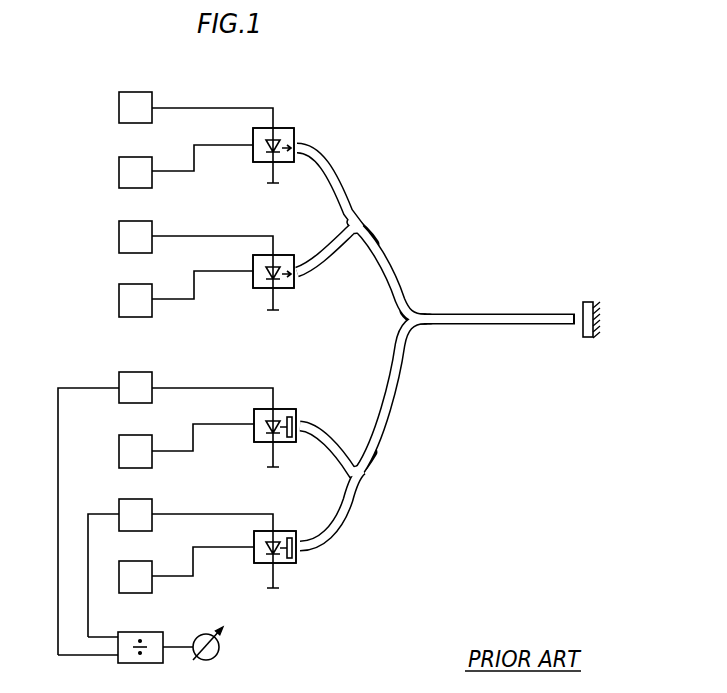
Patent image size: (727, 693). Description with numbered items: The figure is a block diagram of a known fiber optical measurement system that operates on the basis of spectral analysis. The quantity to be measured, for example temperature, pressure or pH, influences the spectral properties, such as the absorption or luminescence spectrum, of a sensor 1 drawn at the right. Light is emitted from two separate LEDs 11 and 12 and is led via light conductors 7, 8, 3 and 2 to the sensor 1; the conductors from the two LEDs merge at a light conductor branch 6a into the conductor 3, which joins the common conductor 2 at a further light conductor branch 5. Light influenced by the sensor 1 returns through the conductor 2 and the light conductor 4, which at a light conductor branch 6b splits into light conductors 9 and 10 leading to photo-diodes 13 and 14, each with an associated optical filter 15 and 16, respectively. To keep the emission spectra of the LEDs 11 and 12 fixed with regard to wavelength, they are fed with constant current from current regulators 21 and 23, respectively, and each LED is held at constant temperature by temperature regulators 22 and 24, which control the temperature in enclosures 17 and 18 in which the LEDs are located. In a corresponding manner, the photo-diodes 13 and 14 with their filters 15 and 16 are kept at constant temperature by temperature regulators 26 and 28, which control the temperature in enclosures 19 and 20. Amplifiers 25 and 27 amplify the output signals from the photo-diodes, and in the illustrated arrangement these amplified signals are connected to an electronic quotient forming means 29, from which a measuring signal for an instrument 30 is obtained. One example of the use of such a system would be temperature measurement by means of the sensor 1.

The sensor 1 is at (587, 302).
The light conductor 2 is at (472, 312).
The light conductor 3 is at (398, 257).
The light conductor 4 is at (400, 400).
The light conductor branch 5 is at (418, 309).
The light conductor branch 6a is at (362, 217).
The light conductor branch 6b is at (350, 482).
The light conductor 7 is at (330, 172).
The light conductor 8 is at (310, 268).
The light conductor 9 is at (318, 428).
The light conductor 10 is at (318, 540).
The LED 11 is at (286, 128).
The LED 12 is at (286, 255).
The photo-diode 13 is at (287, 410).
The photo-diode 14 is at (287, 531).
The optical filter 15 is at (289, 438).
The optical filter 16 is at (289, 559).
The enclosure 17 is at (254, 129).
The enclosure 18 is at (254, 256).
The enclosure 19 is at (254, 409).
The enclosure 20 is at (256, 531).
The current regulator 21 is at (141, 92).
The temperature regulator 22 is at (139, 157).
The current regulator 23 is at (139, 221).
The temperature regulator 24 is at (139, 284).
The amplifier 25 is at (139, 372).
The temperature regulator 26 is at (139, 435).
The amplifier 27 is at (139, 499).
The temperature regulator 28 is at (139, 561).
The electronic quotient forming means 29 is at (140, 632).
The instrument 30 is at (200, 635).